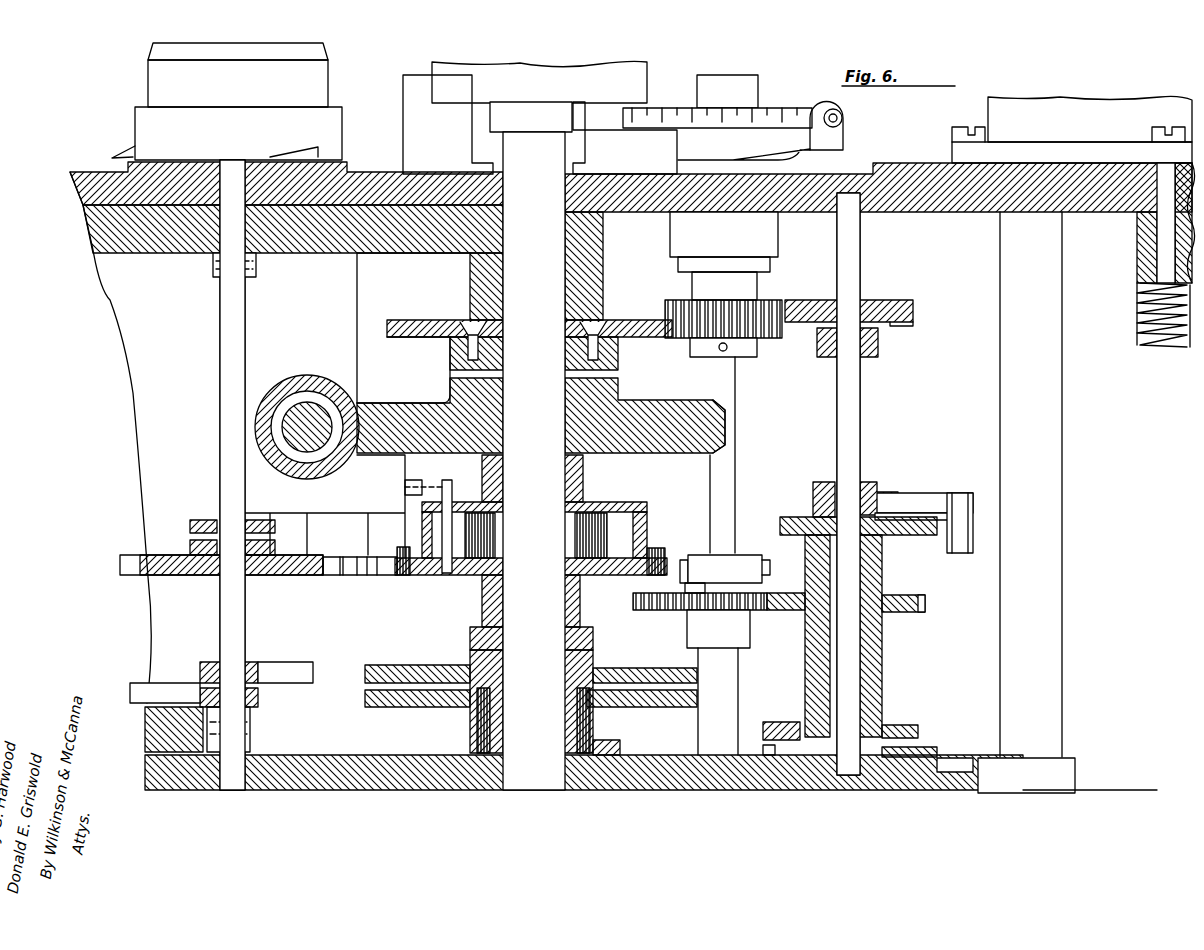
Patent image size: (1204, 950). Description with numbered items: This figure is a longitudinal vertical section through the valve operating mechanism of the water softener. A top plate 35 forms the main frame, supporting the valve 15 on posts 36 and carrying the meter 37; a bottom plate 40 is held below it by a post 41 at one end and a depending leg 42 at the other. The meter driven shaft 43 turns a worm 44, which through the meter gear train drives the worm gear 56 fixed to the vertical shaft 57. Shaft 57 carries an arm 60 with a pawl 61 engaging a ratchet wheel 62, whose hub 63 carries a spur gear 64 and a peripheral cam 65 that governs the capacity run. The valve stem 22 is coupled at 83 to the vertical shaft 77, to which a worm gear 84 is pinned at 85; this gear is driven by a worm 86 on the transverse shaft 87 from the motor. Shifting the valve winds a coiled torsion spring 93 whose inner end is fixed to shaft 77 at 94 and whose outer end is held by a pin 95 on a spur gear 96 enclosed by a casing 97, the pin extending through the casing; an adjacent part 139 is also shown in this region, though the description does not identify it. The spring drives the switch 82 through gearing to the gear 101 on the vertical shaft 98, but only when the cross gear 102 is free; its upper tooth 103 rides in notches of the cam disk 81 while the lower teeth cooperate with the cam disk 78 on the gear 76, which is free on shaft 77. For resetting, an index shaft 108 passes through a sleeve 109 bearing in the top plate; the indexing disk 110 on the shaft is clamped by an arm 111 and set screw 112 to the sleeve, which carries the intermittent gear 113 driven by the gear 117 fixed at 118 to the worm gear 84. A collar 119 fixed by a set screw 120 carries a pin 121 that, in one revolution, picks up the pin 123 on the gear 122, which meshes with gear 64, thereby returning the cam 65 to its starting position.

The valve 15 is at (548, 78).
The stem 22 is at (500, 122).
The top plate 35 is at (848, 182).
The posts 36 is at (403, 90).
The meter 37 is at (1045, 100).
The bottom plate 40 is at (300, 755).
The post 41 is at (1062, 478).
The leg 42 is at (128, 392).
The meter driven shaft 43 is at (1160, 243).
The worm 44 is at (1145, 345).
The worm gear 56 is at (895, 300).
The vertical shaft 57 is at (862, 389).
The arm 60 is at (905, 495).
The pawl 61 is at (950, 515).
The ratchet wheel 62 is at (768, 517).
The hub 63 is at (807, 548).
The spur gear 64 is at (783, 612).
The peripheral cam 65 is at (900, 725).
The gear 76 is at (610, 750).
The vertical shaft 77 is at (550, 678).
The cam disk 78 is at (410, 705).
The cam disk 81 is at (395, 665).
The switch 82 is at (160, 72).
The coupling 83 is at (570, 140).
The worm gear 84 is at (622, 400).
The pin 85 is at (450, 372).
The worm 86 is at (305, 378).
The transverse shaft 87 is at (285, 437).
The coiled torsion spring 93 is at (605, 520).
The inner end fixing 94 is at (553, 545).
The pin 95 is at (450, 510).
The spur gear 96 is at (468, 580).
The casing 97 is at (645, 515).
The vertical shaft 98 is at (245, 306).
The gear 101 is at (185, 575).
The cross gear 102 is at (262, 662).
The upper tooth 103 is at (313, 667).
The index shaft 108 is at (728, 428).
The sleeve 109 is at (705, 288).
The indexing disk 110 is at (758, 110).
The arm 111 is at (800, 148).
The set screw 112 is at (850, 112).
The gear 113 is at (750, 310).
The gear 117 is at (618, 320).
The fixing 118 is at (460, 320).
The collar 119 is at (685, 558).
The set screw 120 is at (768, 566).
The pin 121 is at (695, 587).
The gear 122 is at (707, 674).
The pin 123 is at (683, 590).
The pin 139 is at (412, 488).